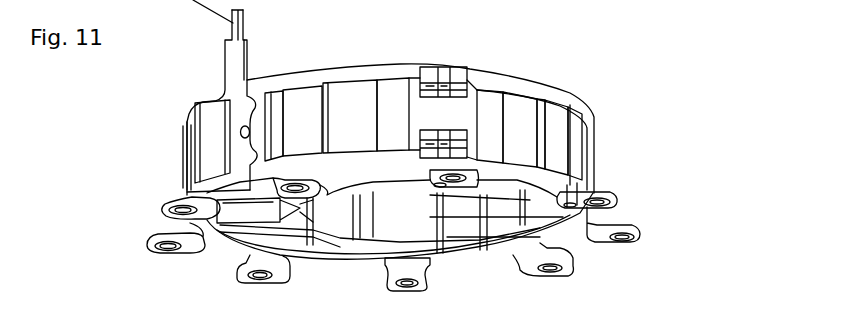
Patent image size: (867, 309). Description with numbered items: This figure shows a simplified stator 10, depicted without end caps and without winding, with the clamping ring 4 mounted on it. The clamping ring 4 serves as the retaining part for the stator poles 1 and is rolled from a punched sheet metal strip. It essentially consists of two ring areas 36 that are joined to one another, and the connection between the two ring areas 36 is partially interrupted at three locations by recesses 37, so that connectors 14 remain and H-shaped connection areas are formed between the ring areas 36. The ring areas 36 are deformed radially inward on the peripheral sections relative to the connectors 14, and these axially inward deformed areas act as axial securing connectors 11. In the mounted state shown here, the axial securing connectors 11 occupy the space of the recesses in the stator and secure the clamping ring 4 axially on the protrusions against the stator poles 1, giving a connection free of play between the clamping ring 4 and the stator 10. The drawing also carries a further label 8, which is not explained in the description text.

The stator pole 1 is at (170, 118).
The clamping ring 4 is at (605, 112).
The stator segment 8 is at (533, 155).
The stator 10 is at (636, 60).
The axial securing connector 11 is at (440, 82).
The connector 14 is at (437, 116).
The ring area 36 is at (205, 105).
The recess 37 is at (561, 91).